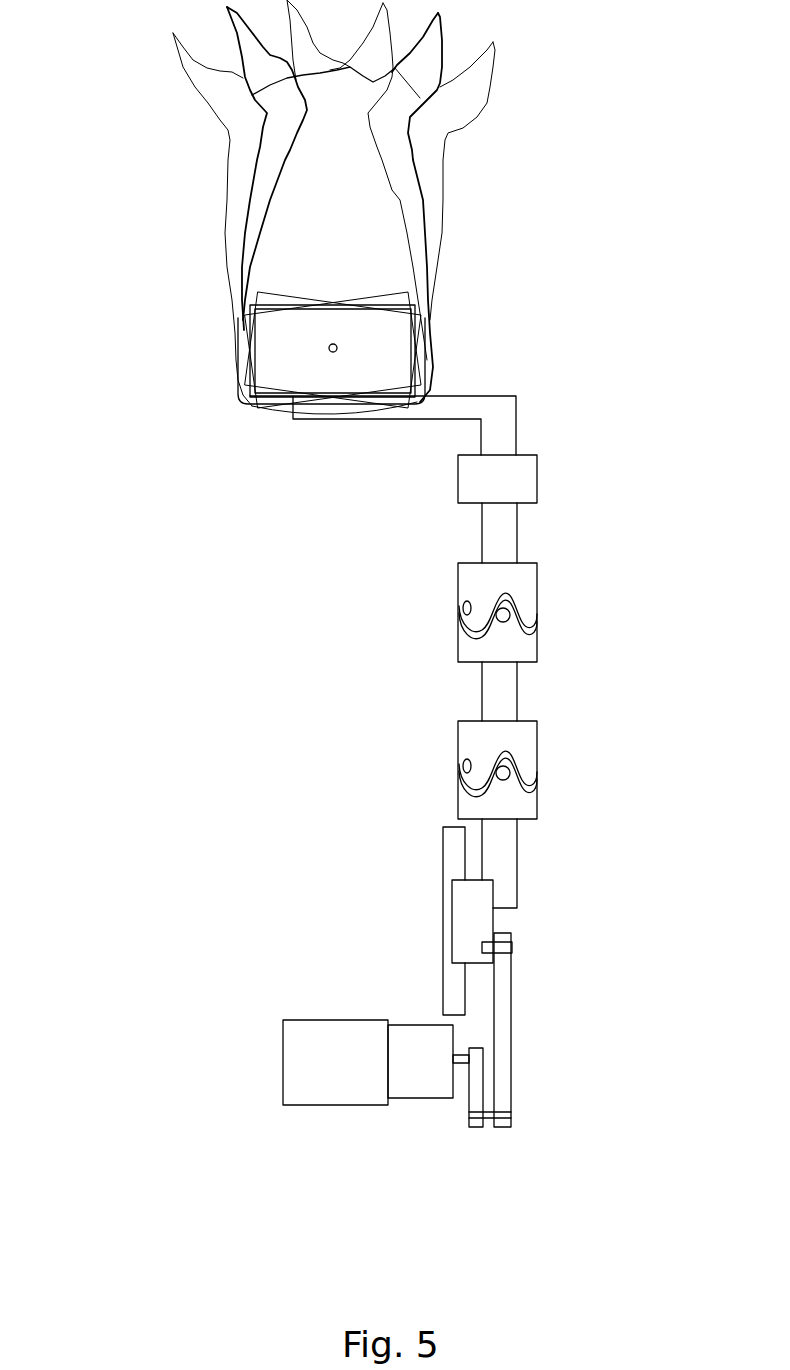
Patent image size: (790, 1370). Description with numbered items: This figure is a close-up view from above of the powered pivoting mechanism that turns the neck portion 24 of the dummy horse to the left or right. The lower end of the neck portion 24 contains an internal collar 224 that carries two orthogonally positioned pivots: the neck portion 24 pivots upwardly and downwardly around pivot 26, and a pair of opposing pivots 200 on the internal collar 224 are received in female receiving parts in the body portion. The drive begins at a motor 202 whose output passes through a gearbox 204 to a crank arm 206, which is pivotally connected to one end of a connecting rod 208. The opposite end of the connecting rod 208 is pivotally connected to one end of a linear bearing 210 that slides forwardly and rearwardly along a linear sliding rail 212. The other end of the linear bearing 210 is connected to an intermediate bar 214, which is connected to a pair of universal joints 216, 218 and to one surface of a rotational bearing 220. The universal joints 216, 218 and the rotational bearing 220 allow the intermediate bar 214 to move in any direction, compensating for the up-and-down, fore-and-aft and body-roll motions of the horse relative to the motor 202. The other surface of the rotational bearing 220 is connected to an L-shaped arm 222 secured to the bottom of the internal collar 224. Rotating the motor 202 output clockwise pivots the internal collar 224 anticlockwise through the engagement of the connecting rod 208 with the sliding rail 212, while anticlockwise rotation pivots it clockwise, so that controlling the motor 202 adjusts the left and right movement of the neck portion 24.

The neck portion 24 is at (398, 168).
The pivot 26 is at (433, 348).
The pair of opposing pivots 200 is at (329, 347).
The motor 202 is at (283, 1097).
The gearbox 204 is at (417, 1098).
The crank arm 206 is at (474, 1128).
The connecting rod 208 is at (503, 1050).
The linear bearing 210 is at (443, 895).
The linear sliding rail 212 is at (440, 993).
The intermediate bar 214 is at (505, 862).
The universal joint 216 is at (470, 750).
The universal joint 218 is at (472, 592).
The rotational bearing 220 is at (537, 470).
The L-shaped arm 222 is at (457, 408).
The internal collar 224 is at (273, 380).